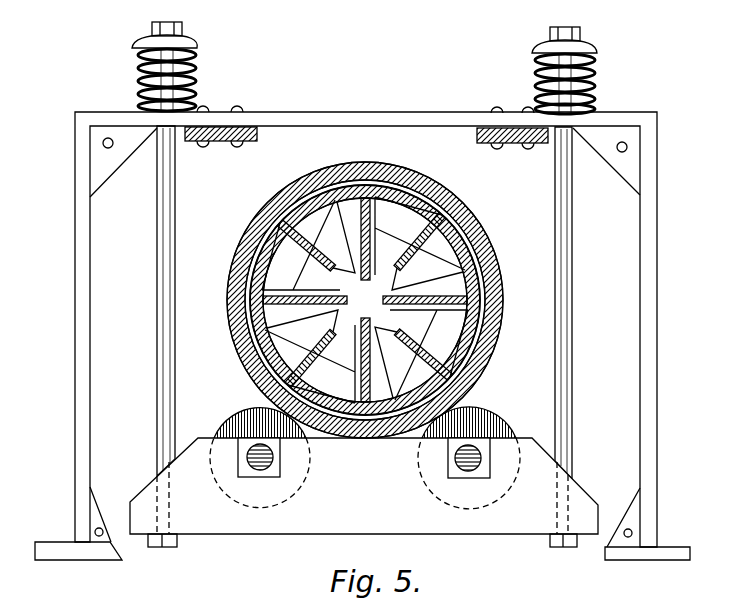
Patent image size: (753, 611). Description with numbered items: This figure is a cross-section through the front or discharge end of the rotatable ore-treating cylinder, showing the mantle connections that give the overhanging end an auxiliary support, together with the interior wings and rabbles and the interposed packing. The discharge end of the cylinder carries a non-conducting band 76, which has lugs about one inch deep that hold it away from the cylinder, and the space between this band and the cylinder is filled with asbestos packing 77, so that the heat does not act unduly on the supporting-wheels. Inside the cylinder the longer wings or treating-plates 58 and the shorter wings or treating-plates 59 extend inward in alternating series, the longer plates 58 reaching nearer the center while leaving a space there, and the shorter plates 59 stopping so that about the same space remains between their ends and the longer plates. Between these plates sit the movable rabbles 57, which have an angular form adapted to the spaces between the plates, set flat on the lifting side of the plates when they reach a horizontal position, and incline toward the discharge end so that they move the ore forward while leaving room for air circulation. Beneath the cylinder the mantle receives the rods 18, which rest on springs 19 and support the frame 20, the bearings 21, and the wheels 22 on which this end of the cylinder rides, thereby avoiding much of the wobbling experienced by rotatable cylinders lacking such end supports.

The rods 18 is at (176, 206).
The springs 19 is at (194, 77).
The frame 20 is at (436, 530).
The bearings 21 is at (274, 473).
The wheels 22 is at (309, 443).
The movable rabbles 57 is at (365, 300).
The longer wings or treating-plates 58 is at (380, 300).
The shorter wings or treating-plates 59 is at (365, 291).
The non-conducting band 76 is at (375, 300).
The asbestos packing 77 is at (365, 297).